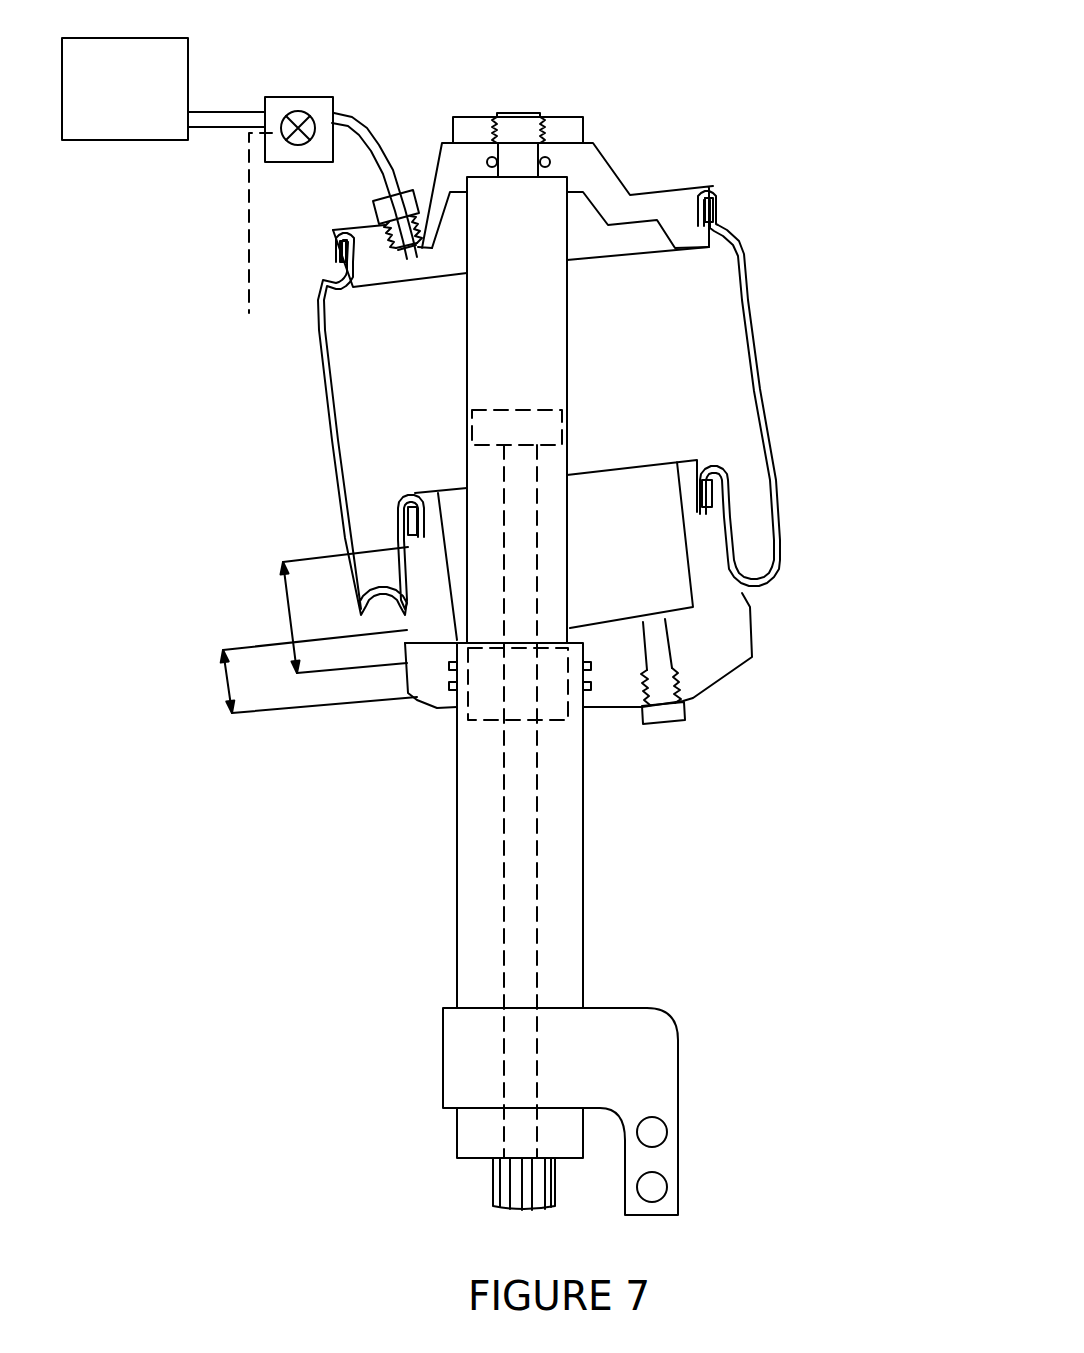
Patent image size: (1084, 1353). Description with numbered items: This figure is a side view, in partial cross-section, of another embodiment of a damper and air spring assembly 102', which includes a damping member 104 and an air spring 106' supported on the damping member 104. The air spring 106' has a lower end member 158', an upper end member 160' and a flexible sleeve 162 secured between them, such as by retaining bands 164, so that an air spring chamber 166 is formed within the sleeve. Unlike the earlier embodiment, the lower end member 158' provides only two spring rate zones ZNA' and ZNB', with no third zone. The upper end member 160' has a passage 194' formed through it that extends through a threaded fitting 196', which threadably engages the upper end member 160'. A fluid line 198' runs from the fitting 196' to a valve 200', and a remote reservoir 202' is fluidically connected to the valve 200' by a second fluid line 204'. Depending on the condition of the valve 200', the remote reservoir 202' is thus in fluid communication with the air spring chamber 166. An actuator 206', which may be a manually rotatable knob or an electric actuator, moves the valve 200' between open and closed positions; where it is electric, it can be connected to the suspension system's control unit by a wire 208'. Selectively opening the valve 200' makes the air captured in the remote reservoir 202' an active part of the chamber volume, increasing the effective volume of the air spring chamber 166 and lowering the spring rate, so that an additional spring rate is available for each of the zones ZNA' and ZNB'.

The damper and air spring assembly 102' is at (620, 646).
The damping member 104 is at (610, 856).
The air spring 106' is at (619, 401).
The lower end member 158' is at (731, 658).
The upper end member 160' is at (529, 182).
The flexible sleeve 162 is at (762, 273).
The retaining bands 164 is at (713, 203).
The air spring chamber 166 is at (660, 374).
The passage 194' is at (406, 301).
The threaded fitting 196' is at (411, 166).
The fluid line 198' is at (353, 186).
The valve 200' is at (304, 81).
The remote reservoir 202' is at (123, 124).
The fluid line 204' is at (216, 169).
The actuator 206' is at (326, 81).
The wire 208' is at (218, 223).
The zone ZNA' is at (293, 609).
The zone ZNB' is at (272, 671).